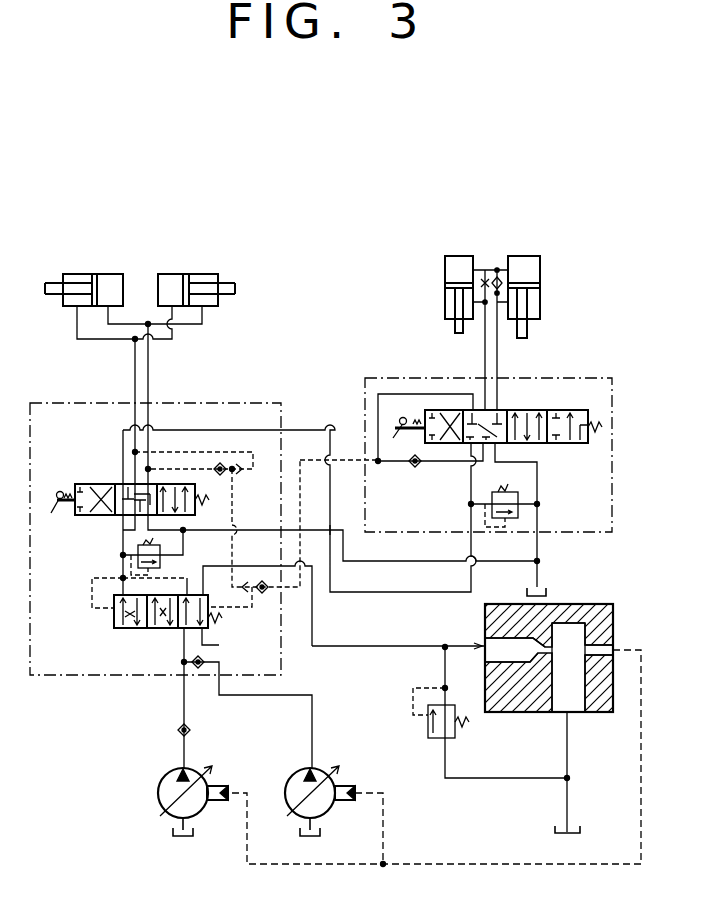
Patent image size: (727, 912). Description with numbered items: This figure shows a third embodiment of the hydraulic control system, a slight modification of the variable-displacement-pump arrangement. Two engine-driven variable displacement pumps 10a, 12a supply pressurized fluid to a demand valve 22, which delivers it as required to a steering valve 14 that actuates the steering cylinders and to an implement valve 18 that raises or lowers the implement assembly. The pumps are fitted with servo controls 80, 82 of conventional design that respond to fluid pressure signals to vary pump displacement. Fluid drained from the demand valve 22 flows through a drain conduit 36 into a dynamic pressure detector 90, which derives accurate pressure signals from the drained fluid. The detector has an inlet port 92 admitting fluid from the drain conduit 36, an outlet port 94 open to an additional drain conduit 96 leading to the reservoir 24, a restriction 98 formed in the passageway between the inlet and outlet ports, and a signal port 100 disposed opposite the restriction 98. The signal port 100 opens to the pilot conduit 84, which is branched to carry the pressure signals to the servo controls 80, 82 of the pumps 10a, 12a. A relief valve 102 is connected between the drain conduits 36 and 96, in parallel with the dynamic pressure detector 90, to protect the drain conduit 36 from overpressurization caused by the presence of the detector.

The steering valve 14 is at (90, 521).
The demand valve 22 is at (118, 633).
The implement valve 18 is at (556, 410).
The drain conduit 36 is at (388, 645).
The servo control 80 is at (226, 786).
The servo control 82 is at (353, 786).
The variable displacement pump 10a is at (210, 801).
The variable displacement pump 12a is at (341, 801).
The dynamic pressure detector 90 is at (554, 656).
The inlet port 92 is at (485, 643).
The outlet port 94 is at (565, 713).
The additional drain conduit 96 is at (565, 812).
The restriction 98 is at (520, 590).
The signal port 100 is at (613, 650).
The relief valve 102 is at (428, 736).
The pilot conduit 84 is at (502, 862).
The reservoir 24 is at (580, 832).